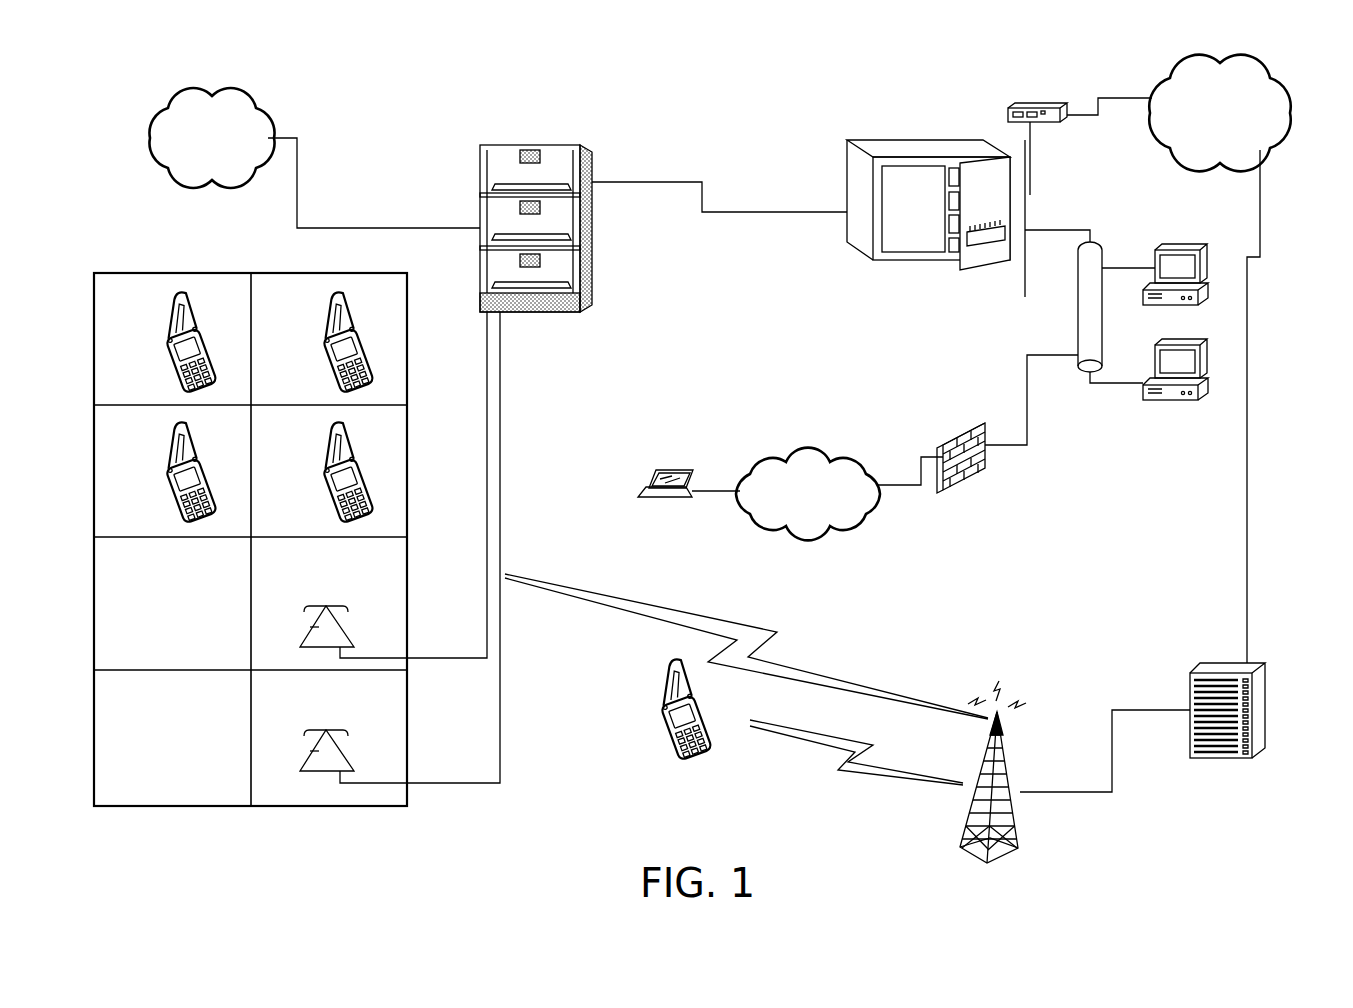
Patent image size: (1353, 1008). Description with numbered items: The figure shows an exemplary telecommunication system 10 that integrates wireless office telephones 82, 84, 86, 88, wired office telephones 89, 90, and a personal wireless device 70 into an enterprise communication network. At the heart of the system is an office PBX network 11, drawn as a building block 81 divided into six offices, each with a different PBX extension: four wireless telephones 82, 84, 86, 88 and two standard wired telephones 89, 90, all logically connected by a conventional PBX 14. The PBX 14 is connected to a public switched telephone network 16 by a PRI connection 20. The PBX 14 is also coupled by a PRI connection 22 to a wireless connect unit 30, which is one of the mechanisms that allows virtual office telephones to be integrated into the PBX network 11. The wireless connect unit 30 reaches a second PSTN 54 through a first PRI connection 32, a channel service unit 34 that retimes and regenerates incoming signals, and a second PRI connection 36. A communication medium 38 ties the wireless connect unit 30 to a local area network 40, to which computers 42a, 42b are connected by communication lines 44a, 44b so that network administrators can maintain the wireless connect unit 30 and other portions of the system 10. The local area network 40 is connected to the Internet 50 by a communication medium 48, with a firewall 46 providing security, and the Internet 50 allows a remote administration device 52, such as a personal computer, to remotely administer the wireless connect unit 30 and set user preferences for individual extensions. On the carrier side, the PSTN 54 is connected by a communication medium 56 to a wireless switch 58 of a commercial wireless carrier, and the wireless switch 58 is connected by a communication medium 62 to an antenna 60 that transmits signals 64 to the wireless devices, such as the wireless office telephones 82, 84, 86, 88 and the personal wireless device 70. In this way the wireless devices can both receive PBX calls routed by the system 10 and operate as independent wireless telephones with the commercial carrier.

The telecommunication system 10 is at (846, 89).
The office PBX network 11 is at (388, 152).
The PBX 14 is at (585, 311).
The public switched telephone network 16 is at (173, 176).
The PRI connection 20 is at (299, 179).
The PRI connection 22 is at (644, 184).
The wireless connect unit 30 is at (858, 252).
The first PRI connection 32 is at (1031, 194).
The channel service unit 34 is at (1068, 120).
The second PRI connection 36 is at (1120, 98).
The communication medium 38 is at (1076, 230).
The local area network 40 is at (1102, 250).
The computer 42a is at (1212, 238).
The computer 42b is at (1202, 350).
The communication line 44a is at (1118, 270).
The communication line 44b is at (1098, 386).
The firewall 46 is at (976, 467).
The communication medium 48 is at (923, 509).
The Internet 50 is at (822, 515).
The remote administration device 52 is at (690, 493).
The PSTN 54 is at (1279, 140).
The communication medium 56 is at (1249, 412).
The wireless switch 58 is at (1266, 748).
The antenna 60 is at (1022, 849).
The communication medium 62 is at (1060, 794).
The signals 64 is at (845, 754).
The personal wireless device 70 is at (668, 719).
The enterprise building 81 is at (221, 273).
The wireless office telephone 82 is at (172, 354).
The wireless office telephone 84 is at (329, 354).
The wireless office telephone 86 is at (172, 484).
The wireless office telephone 88 is at (329, 484).
The wired office telephone 89 is at (318, 624).
The wired office telephone 90 is at (318, 748).